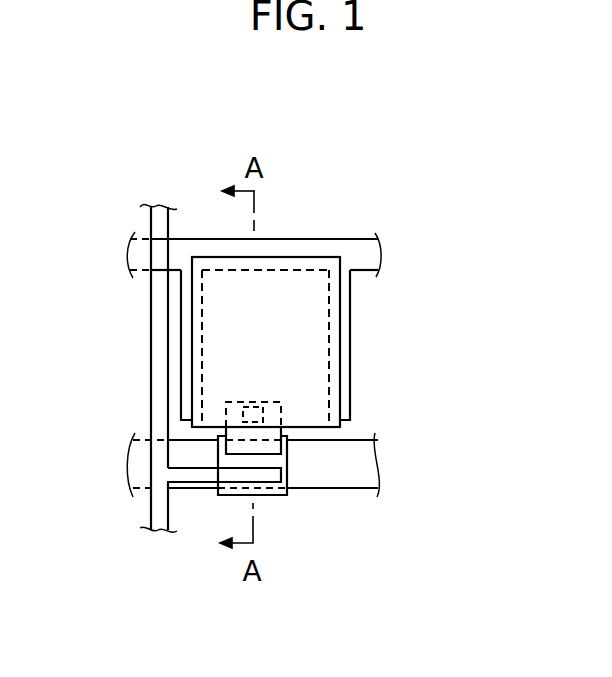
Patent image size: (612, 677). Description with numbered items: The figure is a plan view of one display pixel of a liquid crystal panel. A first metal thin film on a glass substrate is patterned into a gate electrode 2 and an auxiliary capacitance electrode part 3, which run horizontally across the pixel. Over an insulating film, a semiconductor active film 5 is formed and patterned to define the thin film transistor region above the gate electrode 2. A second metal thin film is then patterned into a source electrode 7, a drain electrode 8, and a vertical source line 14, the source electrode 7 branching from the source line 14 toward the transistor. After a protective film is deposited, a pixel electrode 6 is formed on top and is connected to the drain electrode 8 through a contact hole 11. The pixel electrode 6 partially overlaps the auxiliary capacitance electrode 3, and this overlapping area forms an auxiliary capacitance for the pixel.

The gate electrode 2 is at (338, 473).
The auxiliary capacitance electrode part 3 is at (357, 252).
The semiconductor active film 5 is at (287, 462).
The pixel electrode 6 is at (274, 292).
The source electrode 7 is at (207, 475).
The drain electrode 8 is at (273, 416).
The contact hole 11 is at (255, 410).
The source line 14 is at (157, 302).